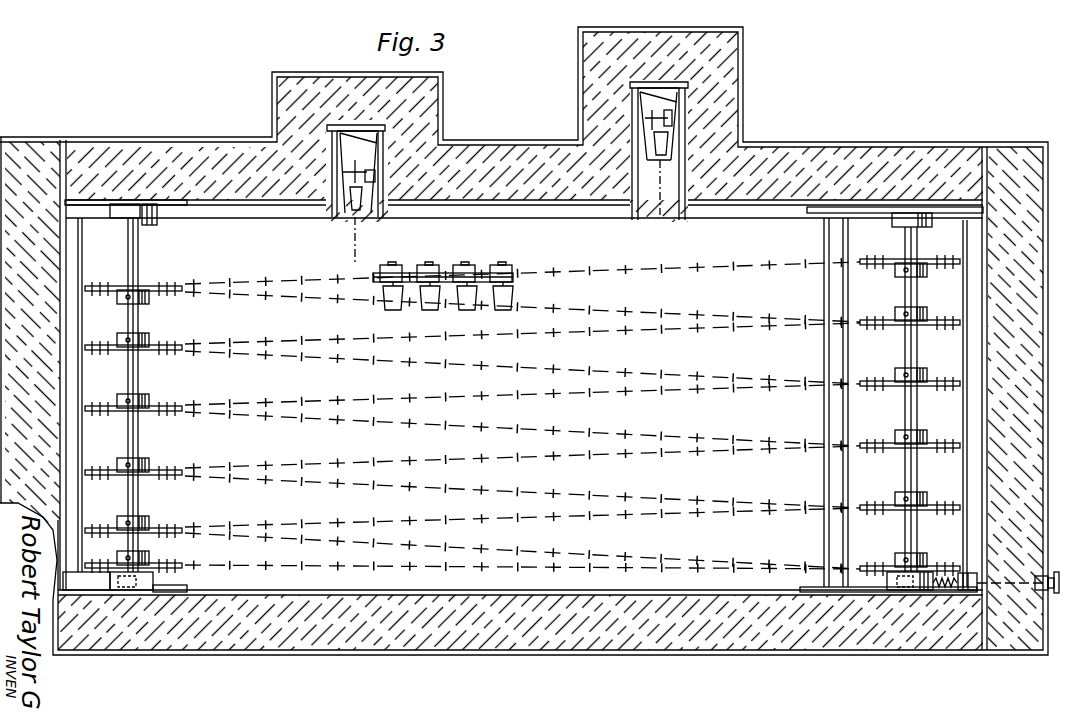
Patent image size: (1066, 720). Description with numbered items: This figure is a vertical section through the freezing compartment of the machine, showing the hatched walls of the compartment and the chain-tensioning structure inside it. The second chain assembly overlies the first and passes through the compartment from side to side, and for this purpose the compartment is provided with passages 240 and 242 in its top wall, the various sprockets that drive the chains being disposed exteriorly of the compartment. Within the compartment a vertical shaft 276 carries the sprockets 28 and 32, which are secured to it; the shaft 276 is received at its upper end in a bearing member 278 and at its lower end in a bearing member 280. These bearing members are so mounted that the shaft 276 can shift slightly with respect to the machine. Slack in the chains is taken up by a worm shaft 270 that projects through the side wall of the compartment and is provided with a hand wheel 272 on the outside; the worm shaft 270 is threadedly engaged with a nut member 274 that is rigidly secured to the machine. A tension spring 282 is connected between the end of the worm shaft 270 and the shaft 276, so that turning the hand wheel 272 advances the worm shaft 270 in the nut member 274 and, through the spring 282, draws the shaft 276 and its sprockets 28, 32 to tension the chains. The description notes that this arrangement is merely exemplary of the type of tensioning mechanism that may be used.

The passage 240 is at (356, 195).
The passage 242 is at (682, 113).
The bearing member 278 is at (908, 218).
The shaft 276 is at (913, 411).
The sprocket 32 is at (872, 503).
The sprocket 28 is at (873, 566).
The nut member 274 is at (965, 575).
The hand wheel 272 is at (1047, 556).
The worm shaft 270 is at (1047, 567).
The bearing member 280 is at (893, 588).
The tension spring 282 is at (950, 590).